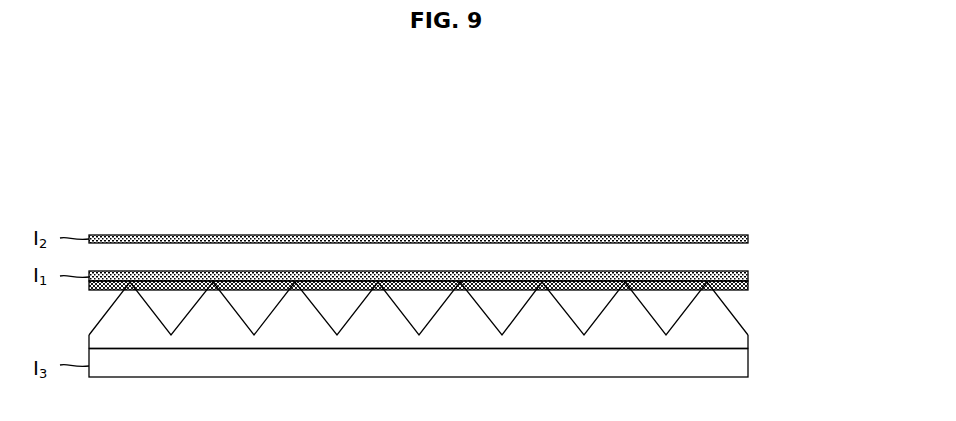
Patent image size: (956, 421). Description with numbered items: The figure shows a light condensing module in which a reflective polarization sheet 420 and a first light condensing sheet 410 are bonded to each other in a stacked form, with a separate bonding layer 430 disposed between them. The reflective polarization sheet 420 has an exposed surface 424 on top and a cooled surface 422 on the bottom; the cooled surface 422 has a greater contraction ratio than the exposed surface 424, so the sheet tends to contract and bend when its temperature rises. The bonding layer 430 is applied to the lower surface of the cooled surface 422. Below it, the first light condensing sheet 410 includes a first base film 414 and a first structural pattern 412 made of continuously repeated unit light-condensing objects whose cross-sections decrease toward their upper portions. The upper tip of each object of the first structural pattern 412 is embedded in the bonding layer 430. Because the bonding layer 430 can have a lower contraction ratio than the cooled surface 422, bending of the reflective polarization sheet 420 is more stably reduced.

The first light condensing sheet 410 is at (471, 325).
The first structural pattern 412 is at (725, 335).
The first base film 414 is at (732, 362).
The reflective polarization sheet 420 is at (460, 230).
The cooled surface 422 is at (733, 272).
The exposed surface 424 is at (733, 237).
The separate bonding layer 430 is at (665, 302).